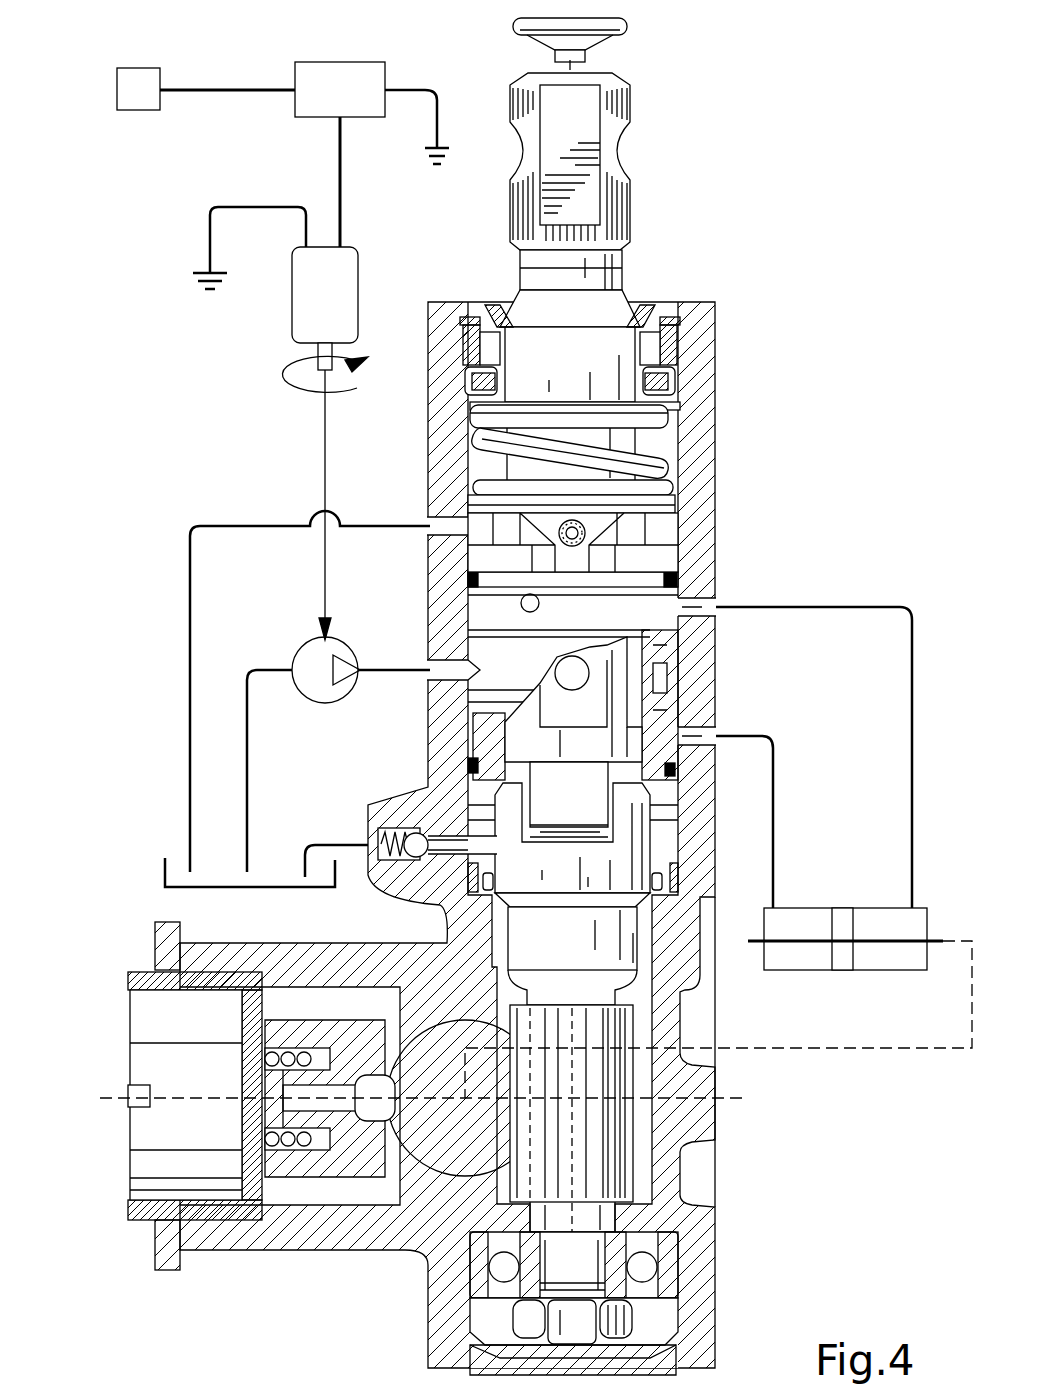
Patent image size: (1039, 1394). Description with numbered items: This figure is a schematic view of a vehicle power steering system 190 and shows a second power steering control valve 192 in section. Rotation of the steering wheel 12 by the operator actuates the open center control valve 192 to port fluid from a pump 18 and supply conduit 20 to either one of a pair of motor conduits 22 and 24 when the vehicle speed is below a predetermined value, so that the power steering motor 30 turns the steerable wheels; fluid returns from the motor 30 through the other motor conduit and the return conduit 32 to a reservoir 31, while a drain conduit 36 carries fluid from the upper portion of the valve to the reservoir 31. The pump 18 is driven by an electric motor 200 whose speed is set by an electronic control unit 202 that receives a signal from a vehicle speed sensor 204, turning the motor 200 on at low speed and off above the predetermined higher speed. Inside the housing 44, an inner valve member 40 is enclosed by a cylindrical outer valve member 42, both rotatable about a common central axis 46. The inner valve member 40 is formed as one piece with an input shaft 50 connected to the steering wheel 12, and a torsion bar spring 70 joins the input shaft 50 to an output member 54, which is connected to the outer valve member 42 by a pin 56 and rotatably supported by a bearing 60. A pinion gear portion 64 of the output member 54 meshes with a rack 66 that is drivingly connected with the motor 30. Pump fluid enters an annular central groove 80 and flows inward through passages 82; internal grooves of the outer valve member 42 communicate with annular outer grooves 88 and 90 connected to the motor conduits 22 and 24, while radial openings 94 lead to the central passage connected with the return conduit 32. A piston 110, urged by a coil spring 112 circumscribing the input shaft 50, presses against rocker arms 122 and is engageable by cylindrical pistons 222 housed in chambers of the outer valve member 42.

The steering wheel 12 is at (613, 26).
The pump 18 is at (325, 698).
The supply conduit 20 is at (405, 675).
The motor conduit 22 is at (885, 607).
The motor conduit 24 is at (780, 745).
The power steering motor 30 is at (875, 970).
The reservoir 31 is at (165, 866).
The return conduit 32 is at (337, 843).
The drain conduit 36 is at (188, 548).
The inner valve member 40 is at (642, 699).
The outer valve member 42 is at (462, 655).
The housing 44 is at (705, 345).
The central axis 46 is at (590, 168).
The input shaft 50 is at (537, 258).
The output member 54 is at (615, 940).
The pin 56 is at (480, 805).
The bearing 60 is at (647, 1268).
The pinion gear portion 64 is at (633, 1137).
The rack 66 is at (443, 1137).
The torsion bar spring 70 is at (587, 837).
The annular central groove 80 is at (668, 680).
The passages 82 is at (478, 692).
The annular outer groove 88 is at (718, 600).
The annular outer groove 90 is at (686, 745).
The openings 94 is at (566, 682).
The piston 110 is at (645, 447).
The coil spring 112 is at (480, 430).
The rocker arms 122 is at (470, 542).
The vehicle power steering system 190 is at (732, 128).
The power steering control valve 192 is at (680, 280).
The electric motor 200 is at (297, 330).
The electronic control unit 202 is at (325, 72).
The vehicle speed sensor 204 is at (132, 85).
The piston 222 is at (513, 523).